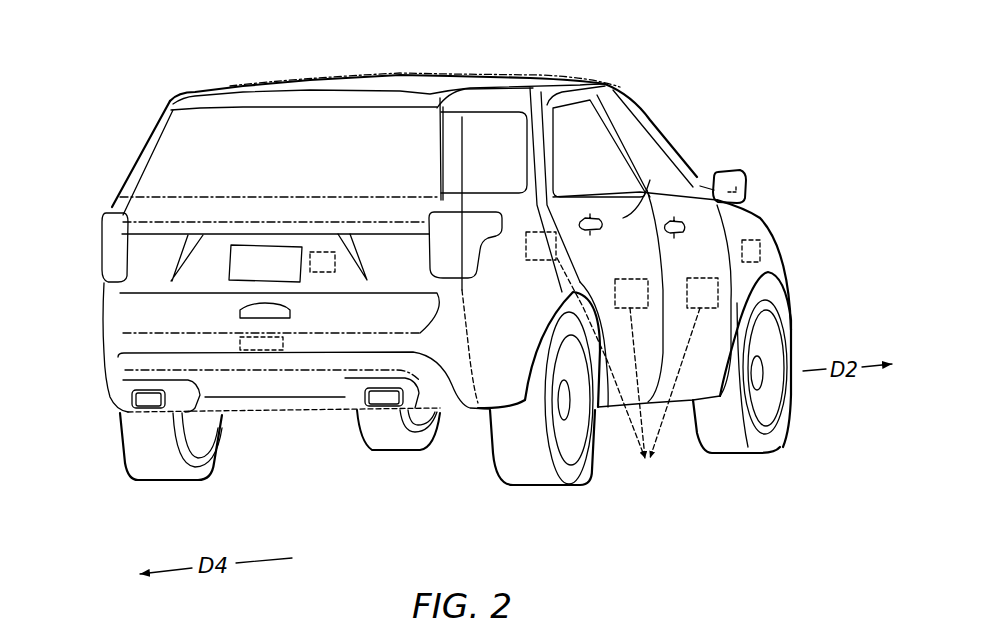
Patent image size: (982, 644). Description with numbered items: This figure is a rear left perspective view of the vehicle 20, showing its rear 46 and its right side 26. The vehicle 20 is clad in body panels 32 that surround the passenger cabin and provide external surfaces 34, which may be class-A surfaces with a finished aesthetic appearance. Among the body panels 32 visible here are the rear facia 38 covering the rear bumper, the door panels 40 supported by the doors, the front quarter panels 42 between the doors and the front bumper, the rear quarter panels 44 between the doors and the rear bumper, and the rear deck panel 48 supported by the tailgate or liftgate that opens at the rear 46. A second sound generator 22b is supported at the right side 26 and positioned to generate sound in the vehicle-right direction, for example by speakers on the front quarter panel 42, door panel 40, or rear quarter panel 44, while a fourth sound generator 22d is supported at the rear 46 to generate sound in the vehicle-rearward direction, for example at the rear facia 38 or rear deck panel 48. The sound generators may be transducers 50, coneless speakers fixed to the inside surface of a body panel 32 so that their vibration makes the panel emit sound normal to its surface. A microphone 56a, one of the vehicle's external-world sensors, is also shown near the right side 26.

The vehicle 20 is at (650, 115).
The second sound generator 22b is at (523, 227).
The fourth sound generator 22d is at (317, 245).
The right side 26 is at (752, 213).
The body panels 32 is at (462, 266).
The external surfaces 34 is at (531, 323).
The rear facia 38 is at (218, 342).
The door panels 40 is at (653, 276).
The front quarter panels 42 is at (757, 230).
The rear quarter panels 44 is at (541, 200).
The rear 46 is at (313, 420).
The rear deck panel 48 is at (340, 240).
The transducers 50 is at (312, 272).
The microphone 56a is at (736, 172).